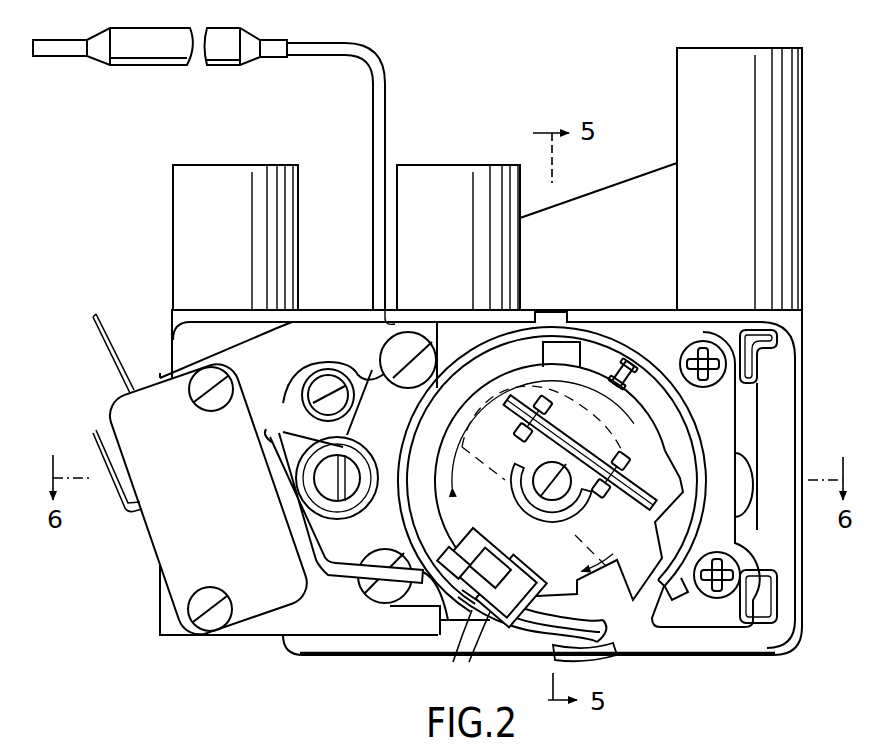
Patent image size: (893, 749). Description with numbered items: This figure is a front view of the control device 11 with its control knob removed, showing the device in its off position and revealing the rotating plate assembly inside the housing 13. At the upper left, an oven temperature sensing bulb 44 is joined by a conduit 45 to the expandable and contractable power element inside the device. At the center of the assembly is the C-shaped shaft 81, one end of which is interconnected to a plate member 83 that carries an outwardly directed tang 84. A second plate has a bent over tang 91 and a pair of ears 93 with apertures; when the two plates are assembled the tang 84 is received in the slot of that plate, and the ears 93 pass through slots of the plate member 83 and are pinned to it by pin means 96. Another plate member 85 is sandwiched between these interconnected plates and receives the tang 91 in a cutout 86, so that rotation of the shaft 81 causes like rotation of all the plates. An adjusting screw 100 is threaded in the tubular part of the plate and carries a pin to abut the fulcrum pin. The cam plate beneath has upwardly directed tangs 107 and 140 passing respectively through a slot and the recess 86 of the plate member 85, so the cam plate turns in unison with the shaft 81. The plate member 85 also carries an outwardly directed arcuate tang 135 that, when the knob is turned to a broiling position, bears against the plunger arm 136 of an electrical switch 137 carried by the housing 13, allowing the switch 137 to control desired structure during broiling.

The control device 11 is at (124, 301).
The housing 13 is at (803, 357).
The oven temperature sensing bulb 44 is at (160, 56).
The conduit 45 is at (386, 108).
The C-shaped shaft 81 is at (515, 496).
The plate member 83 is at (650, 443).
The outwardly directed tang 84 is at (470, 615).
The plate member 85 is at (432, 422).
The cutout 86 is at (408, 535).
The bent over tang 91 is at (483, 625).
The ears 93 is at (507, 390).
The pin means 96 is at (625, 412).
The adjusting screw 100 is at (574, 502).
The upwardly directed tang 107 is at (632, 368).
The outwardly directed arcuate tang 135 is at (583, 660).
The plunger arm 136 is at (343, 577).
The electrical switch 137 is at (263, 597).
The upwardly directed tang 140 is at (438, 606).